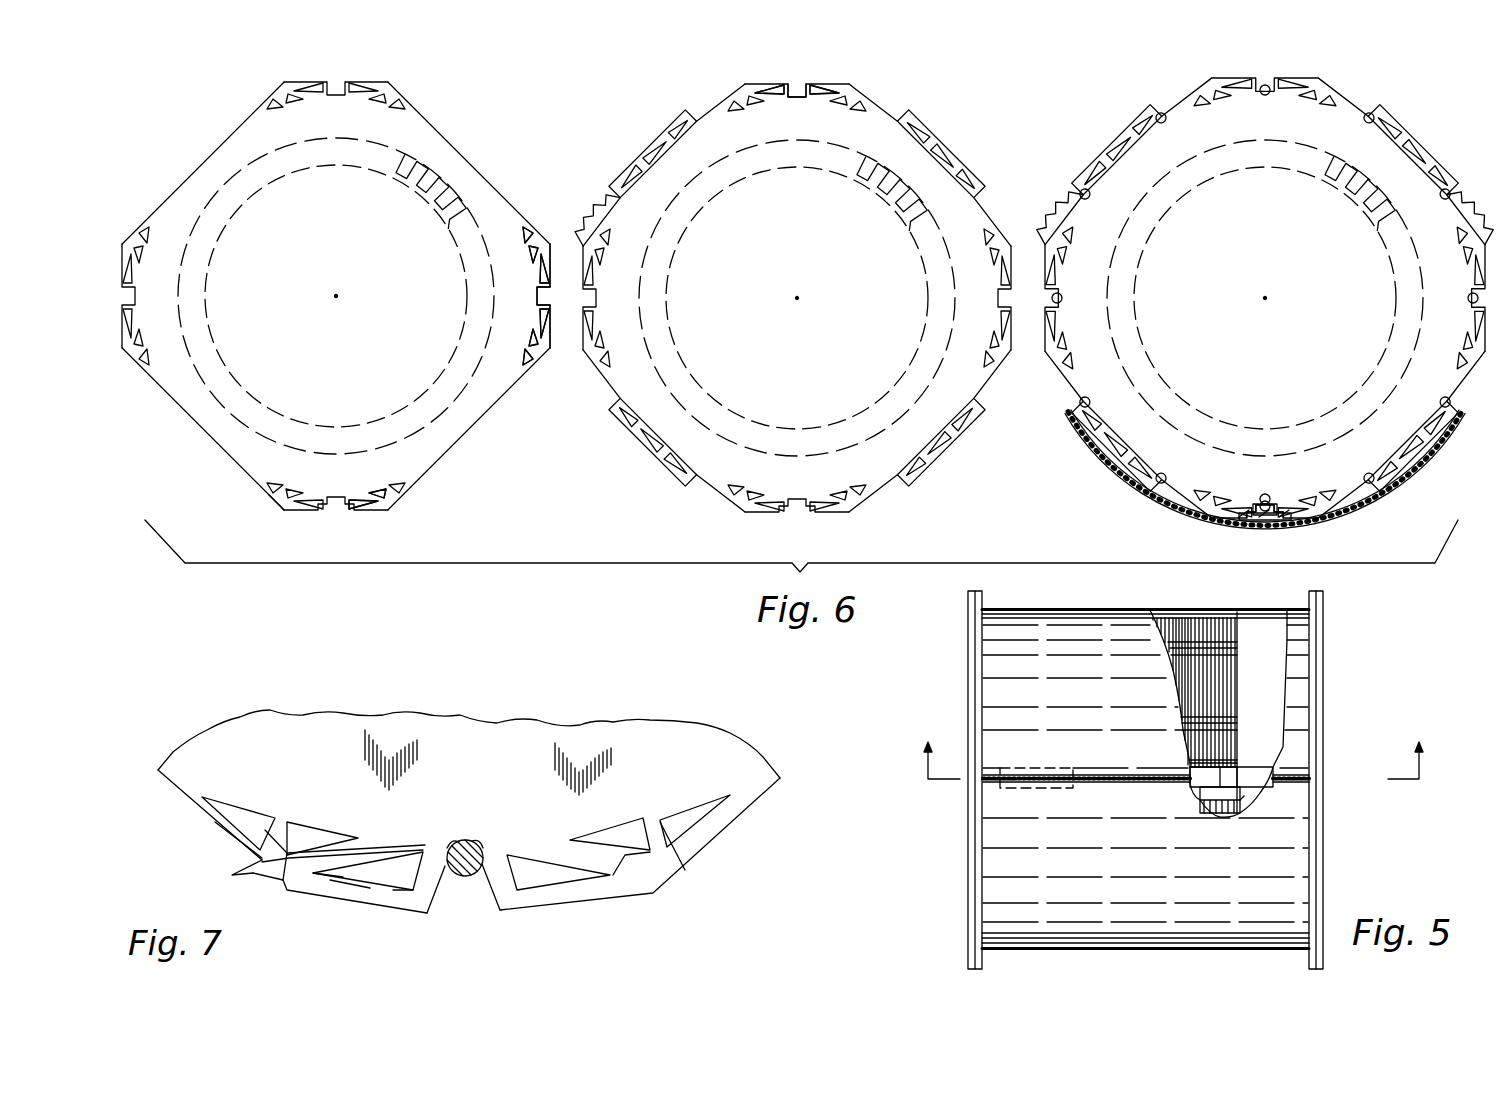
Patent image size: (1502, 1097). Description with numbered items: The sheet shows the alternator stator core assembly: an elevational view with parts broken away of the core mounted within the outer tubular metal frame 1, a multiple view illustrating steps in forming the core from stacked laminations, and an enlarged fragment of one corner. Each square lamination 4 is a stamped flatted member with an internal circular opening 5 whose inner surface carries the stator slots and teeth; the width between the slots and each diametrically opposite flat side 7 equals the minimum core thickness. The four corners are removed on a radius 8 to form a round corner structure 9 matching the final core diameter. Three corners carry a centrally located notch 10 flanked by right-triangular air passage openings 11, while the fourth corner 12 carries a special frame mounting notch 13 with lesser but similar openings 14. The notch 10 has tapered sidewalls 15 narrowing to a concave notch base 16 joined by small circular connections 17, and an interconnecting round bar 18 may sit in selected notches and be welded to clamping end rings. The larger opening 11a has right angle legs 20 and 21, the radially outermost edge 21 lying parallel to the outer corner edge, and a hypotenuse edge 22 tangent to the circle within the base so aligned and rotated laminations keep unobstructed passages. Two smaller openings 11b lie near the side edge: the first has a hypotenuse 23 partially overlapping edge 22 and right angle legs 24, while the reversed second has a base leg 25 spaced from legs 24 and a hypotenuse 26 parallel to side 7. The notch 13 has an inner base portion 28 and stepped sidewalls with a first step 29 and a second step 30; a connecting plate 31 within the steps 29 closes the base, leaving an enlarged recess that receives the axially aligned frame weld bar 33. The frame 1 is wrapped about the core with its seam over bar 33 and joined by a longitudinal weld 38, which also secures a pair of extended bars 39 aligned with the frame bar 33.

In FIG. 6, the outer tubular metal frame 1 is at (1265, 298).
In FIG. 5, the outer tubular metal frame 1 is at (1102, 609).
In FIG. 6, the square lamination 4 is at (308, 296).
In FIG. 6, the internal circular opening 5 is at (1265, 298).
In FIG. 6, the flat side 7 is at (708, 298).
In FIG. 7, the flat side 7 is at (193, 805).
In FIG. 6, the radius 8 is at (945, 214).
In FIG. 7, the radius 8 is at (613, 897).
In FIG. 5, the radius 8 is at (1174, 746).
In FIG. 6, the corner structure 9 is at (206, 84).
In FIG. 7, the corner structure 9 is at (545, 917).
In FIG. 6, the notch 10 is at (601, 304).
In FIG. 7, the notch 10 is at (470, 917).
In FIG. 5, the notch 10 is at (1241, 726).
In FIG. 6, the air passage openings 11 is at (511, 309).
In FIG. 7, the air passage openings 11 is at (370, 888).
In FIG. 7, the larger air passage opening 11a is at (393, 890).
In FIG. 7, the smaller air passage opening 11b is at (250, 863).
In FIG. 6, the fourth corner 12 is at (263, 524).
In FIG. 6, the frame mounting notch 13 is at (787, 336).
In FIG. 5, the frame mounting notch 13 is at (1241, 765).
In FIG. 6, the air passage openings 14 is at (389, 472).
In FIG. 7, the tapered sidewalls 15 is at (493, 890).
In FIG. 7, the notch base 16 is at (463, 840).
In FIG. 7, the circular connections 17 is at (450, 840).
In FIG. 6, the interconnecting round bar 18 is at (1265, 298).
In FIG. 7, the interconnecting round bar 18 is at (483, 857).
In FIG. 5, the interconnecting round bar 18 is at (1163, 649).
In FIG. 7, the right angle leg 20 is at (423, 872).
In FIG. 7, the radially outermost edge 21 is at (343, 877).
In FIG. 7, the hypotenuse edge 22 is at (372, 860).
In FIG. 7, the hypotenuse 23 is at (283, 870).
In FIG. 7, the right angle legs 24 is at (283, 833).
In FIG. 7, the base leg 25 is at (268, 820).
In FIG. 7, the hypotenuse 26 is at (230, 827).
In FIG. 5, the inner base portion 28 is at (1239, 804).
In FIG. 6, the first step 29 is at (1294, 480).
In FIG. 6, the second step 30 is at (1265, 482).
In FIG. 6, the connecting plate 31 is at (1240, 484).
In FIG. 5, the connecting plate 31 is at (1216, 811).
In FIG. 6, the frame weld bar 33 is at (1251, 536).
In FIG. 5, the frame weld bar 33 is at (1195, 781).
In FIG. 6, the longitudinal weld 38 is at (1268, 538).
In FIG. 5, the longitudinal weld 38 is at (1033, 786).
In FIG. 5, the extended bars 39 is at (1073, 768).